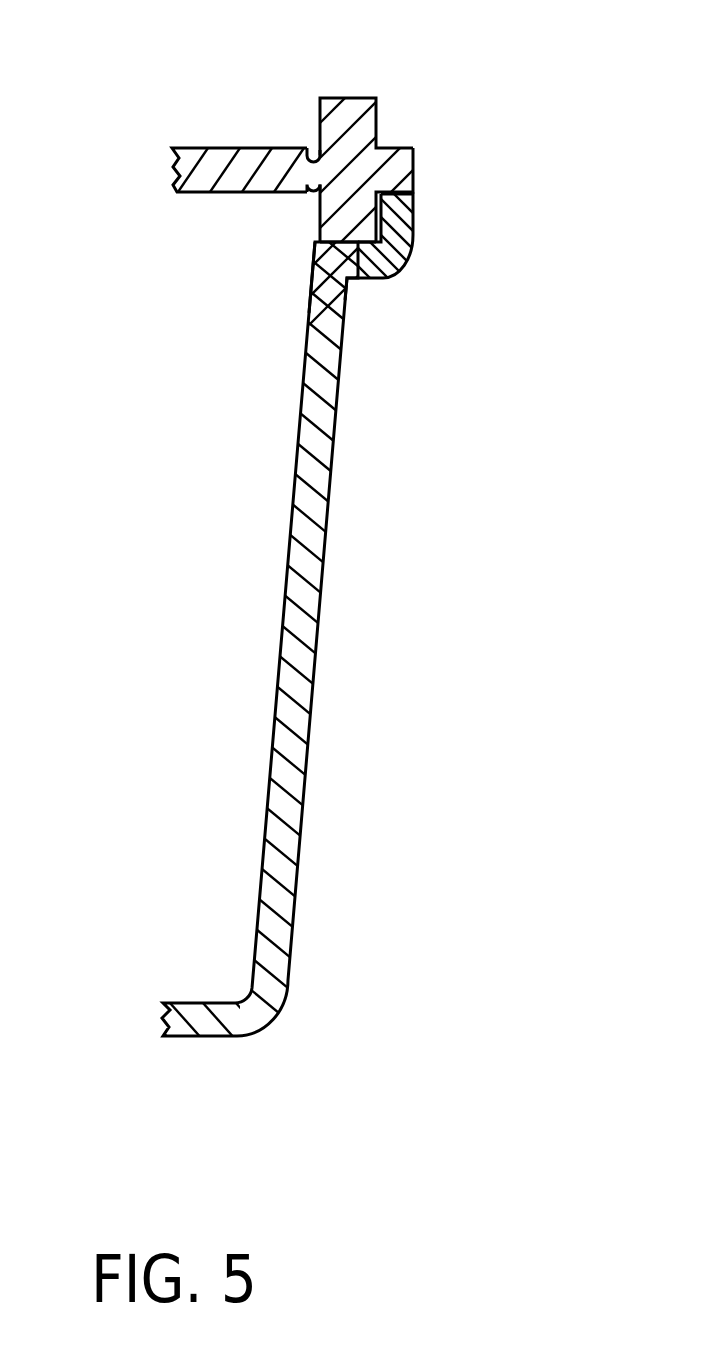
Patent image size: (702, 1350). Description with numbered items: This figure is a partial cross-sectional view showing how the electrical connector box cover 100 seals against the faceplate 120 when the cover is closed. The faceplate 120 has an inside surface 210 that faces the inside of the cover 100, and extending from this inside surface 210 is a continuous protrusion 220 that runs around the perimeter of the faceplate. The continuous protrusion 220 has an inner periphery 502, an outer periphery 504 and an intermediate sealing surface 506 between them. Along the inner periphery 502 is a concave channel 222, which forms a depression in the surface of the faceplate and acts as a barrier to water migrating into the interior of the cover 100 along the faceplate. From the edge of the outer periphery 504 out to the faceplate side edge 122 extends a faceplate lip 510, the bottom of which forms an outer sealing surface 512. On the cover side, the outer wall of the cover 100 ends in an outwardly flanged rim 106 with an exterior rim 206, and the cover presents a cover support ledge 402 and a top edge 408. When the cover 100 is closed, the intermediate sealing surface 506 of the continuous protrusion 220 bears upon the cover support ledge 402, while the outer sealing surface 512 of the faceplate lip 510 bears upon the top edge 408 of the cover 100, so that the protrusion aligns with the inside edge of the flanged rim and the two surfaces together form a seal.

The electrical connector box cover 100 is at (314, 575).
The faceplate 120 is at (313, 183).
The inside surface 210 is at (211, 192).
The concave channel 222 is at (313, 193).
The inner periphery 502 is at (319, 210).
The continuous protrusion 220 is at (342, 220).
The cover support ledge 402 is at (313, 313).
The faceplate lip 510 is at (396, 168).
The faceplate side edge 122 is at (413, 158).
The outer sealing surface 512 is at (413, 175).
The top edge 408 is at (413, 202).
The outer periphery 504 is at (413, 230).
The exterior rim 206 is at (413, 237).
The outwardly flanged rim 106 is at (430, 225).
The intermediate sealing surface 506 is at (358, 278).